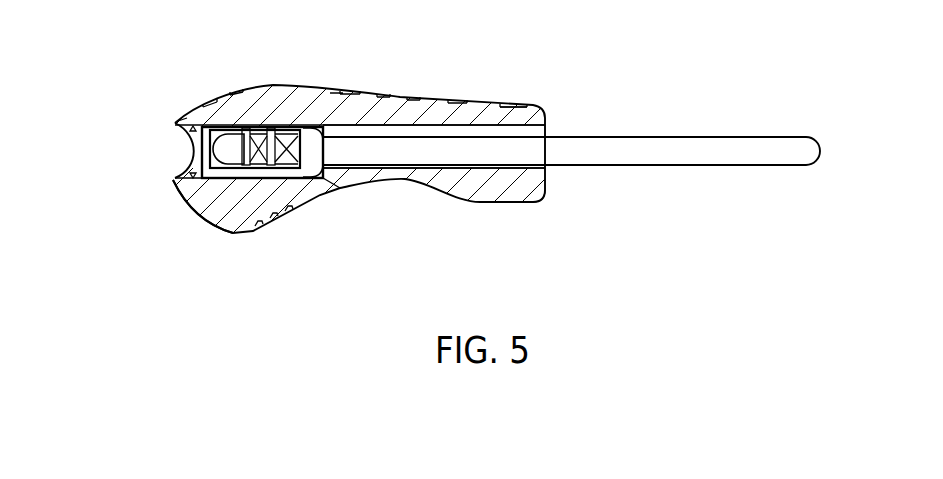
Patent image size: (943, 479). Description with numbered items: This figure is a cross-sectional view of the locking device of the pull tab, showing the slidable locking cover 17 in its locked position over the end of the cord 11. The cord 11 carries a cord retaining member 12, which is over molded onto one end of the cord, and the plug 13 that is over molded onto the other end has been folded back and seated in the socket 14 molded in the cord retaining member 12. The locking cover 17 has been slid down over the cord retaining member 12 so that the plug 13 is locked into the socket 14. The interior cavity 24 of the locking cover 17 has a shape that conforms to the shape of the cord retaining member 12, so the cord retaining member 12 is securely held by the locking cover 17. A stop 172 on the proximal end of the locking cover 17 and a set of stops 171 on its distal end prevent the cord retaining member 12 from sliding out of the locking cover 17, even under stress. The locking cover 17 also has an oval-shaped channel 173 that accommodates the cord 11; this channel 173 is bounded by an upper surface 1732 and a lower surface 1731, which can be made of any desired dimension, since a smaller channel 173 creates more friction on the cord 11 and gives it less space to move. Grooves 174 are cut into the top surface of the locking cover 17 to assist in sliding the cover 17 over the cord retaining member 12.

The cord 11 is at (677, 142).
The cord retaining member 12 is at (313, 140).
The plug 13 is at (303, 183).
The socket 14 is at (260, 143).
The slidable locking cover 17 is at (412, 113).
The stops 171 is at (190, 142).
The stop 172 is at (250, 187).
The oval-shaped channel 173 is at (528, 147).
The lower surface 1731 is at (551, 170).
The upper surface 1732 is at (517, 108).
The grooves 174 is at (465, 103).
The interior cavity 24 is at (327, 177).